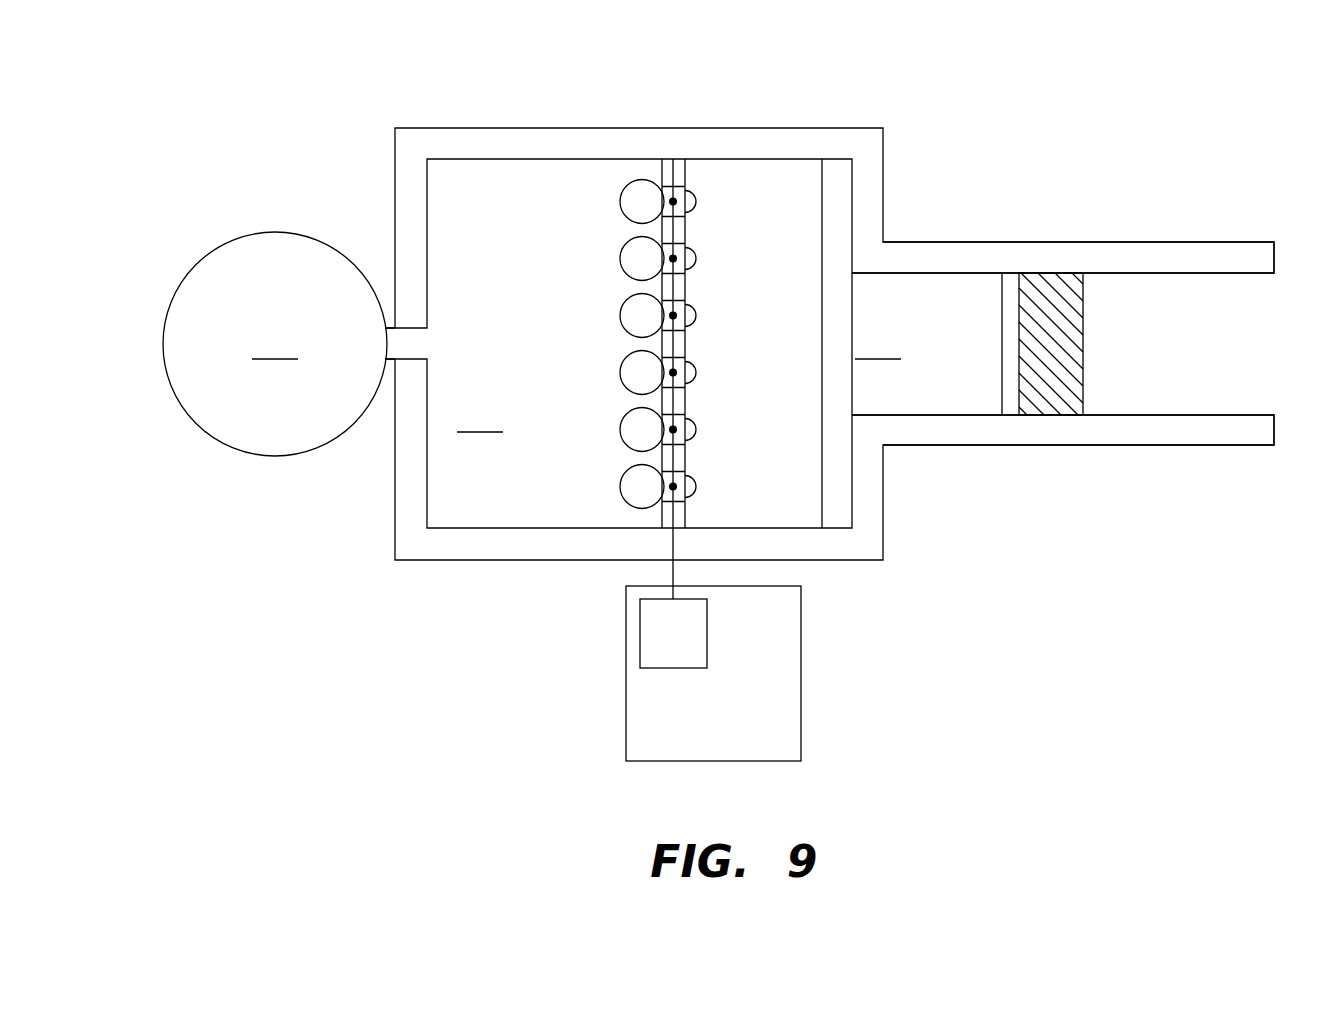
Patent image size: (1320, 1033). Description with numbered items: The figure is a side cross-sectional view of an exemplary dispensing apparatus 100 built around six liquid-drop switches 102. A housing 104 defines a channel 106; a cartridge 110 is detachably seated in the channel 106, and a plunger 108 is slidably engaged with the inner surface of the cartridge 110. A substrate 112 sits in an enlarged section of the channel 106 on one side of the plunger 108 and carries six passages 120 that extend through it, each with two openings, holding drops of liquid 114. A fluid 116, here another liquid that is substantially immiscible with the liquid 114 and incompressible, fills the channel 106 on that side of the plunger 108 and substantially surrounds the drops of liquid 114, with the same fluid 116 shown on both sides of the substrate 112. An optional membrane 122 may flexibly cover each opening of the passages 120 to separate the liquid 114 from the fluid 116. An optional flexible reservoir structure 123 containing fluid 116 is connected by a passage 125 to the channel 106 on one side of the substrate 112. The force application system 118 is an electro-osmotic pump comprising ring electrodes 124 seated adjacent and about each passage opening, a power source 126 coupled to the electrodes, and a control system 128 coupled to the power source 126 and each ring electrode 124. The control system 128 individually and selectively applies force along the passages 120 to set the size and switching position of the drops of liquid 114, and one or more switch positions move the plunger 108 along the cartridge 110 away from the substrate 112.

The dispensing apparatus 100 is at (347, 98).
The switches 102 is at (697, 206).
The housing 104 is at (837, 137).
The channel 106 is at (933, 308).
The plunger 108 is at (1050, 280).
The cartridge 110 is at (1127, 435).
The substrate 112 is at (675, 160).
The liquid 114 is at (627, 194).
The fluid 116 is at (576, 381).
The force application system 118 is at (622, 606).
The passages 120 is at (648, 204).
The membrane 122 is at (697, 194).
The reservoir structure 123 is at (175, 295).
The ring electrodes 124 is at (1212, 252).
The passage 125 is at (412, 343).
The power source 126 is at (650, 646).
The control system 128 is at (690, 721).